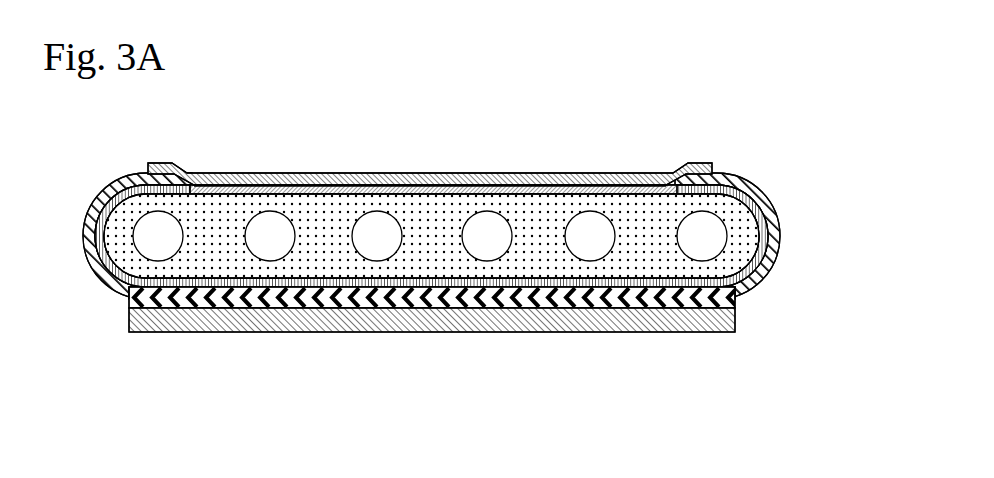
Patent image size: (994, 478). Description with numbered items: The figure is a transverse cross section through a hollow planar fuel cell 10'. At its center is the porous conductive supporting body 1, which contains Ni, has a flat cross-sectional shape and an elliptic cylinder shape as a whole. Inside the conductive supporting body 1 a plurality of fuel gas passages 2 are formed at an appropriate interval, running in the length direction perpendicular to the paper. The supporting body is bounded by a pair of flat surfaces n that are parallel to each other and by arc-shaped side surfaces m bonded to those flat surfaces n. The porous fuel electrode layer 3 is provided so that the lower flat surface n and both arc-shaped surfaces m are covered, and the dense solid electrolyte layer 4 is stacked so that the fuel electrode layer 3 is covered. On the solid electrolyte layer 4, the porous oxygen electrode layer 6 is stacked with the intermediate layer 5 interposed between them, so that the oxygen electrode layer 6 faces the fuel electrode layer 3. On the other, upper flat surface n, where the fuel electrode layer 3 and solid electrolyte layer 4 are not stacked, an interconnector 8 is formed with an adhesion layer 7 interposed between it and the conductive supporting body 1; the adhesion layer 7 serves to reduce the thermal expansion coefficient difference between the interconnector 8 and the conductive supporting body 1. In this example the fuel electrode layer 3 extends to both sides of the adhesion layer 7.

The conductive supporting body 1 is at (317, 257).
The fuel gas passages 2 is at (362, 237).
The fuel electrode layer 3 is at (735, 293).
The solid electrolyte layer 4 is at (524, 290).
The intermediate layer 5 is at (127, 298).
The oxygen electrode layer 6 is at (597, 325).
The adhesion layer 7 is at (648, 187).
The interconnector 8 is at (372, 180).
The fuel cell 10' is at (442, 182).
The flat surfaces n is at (532, 188).
The arc-shaped surfaces m is at (103, 243).